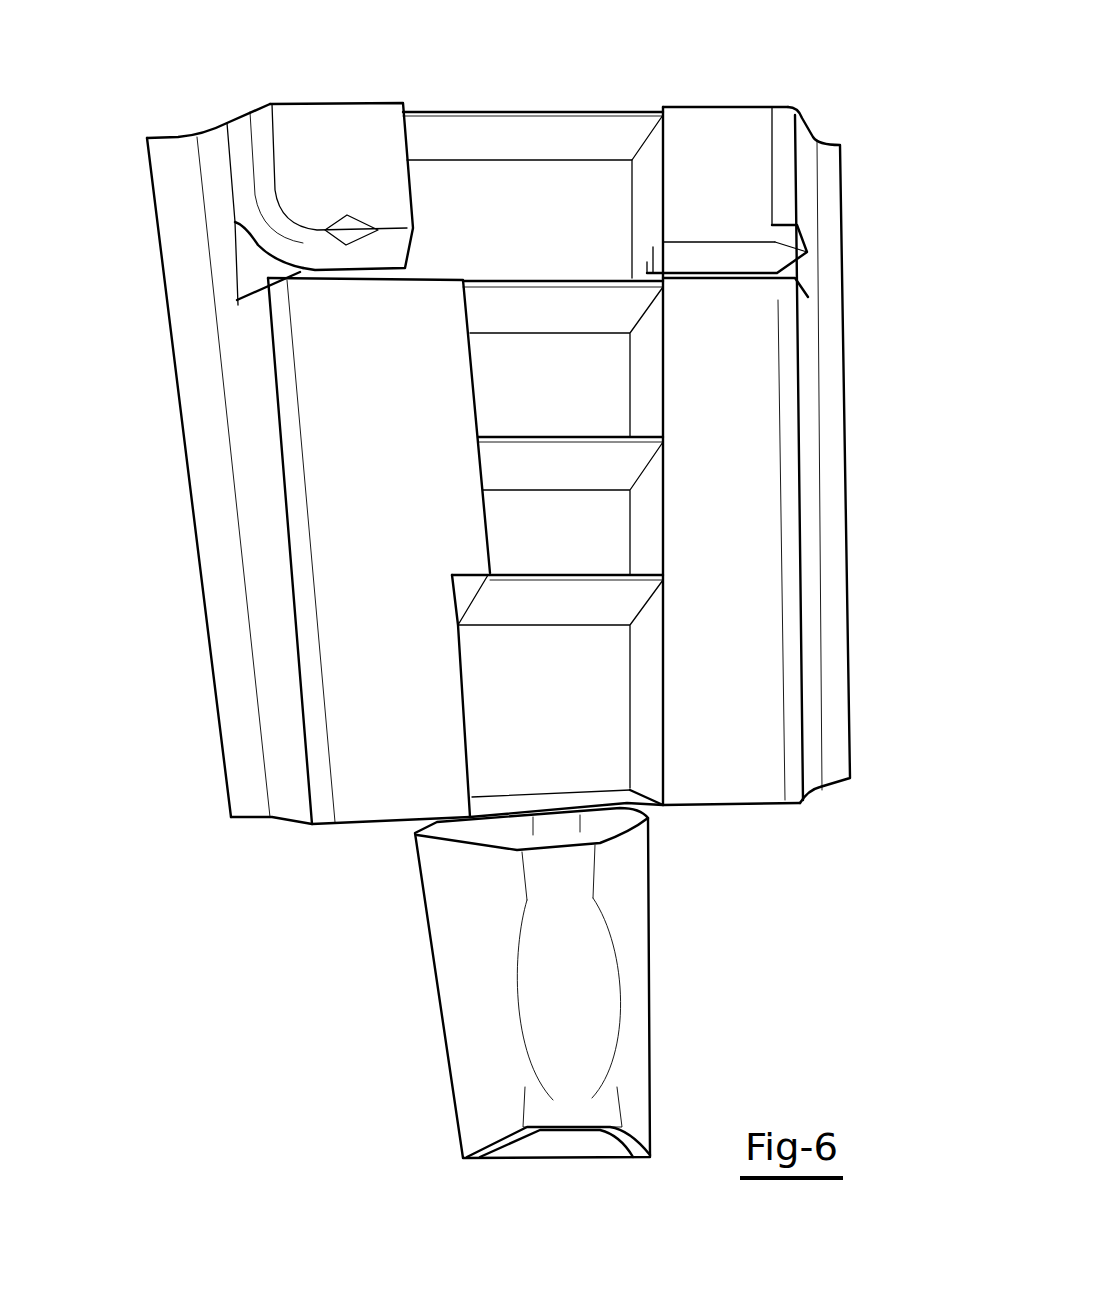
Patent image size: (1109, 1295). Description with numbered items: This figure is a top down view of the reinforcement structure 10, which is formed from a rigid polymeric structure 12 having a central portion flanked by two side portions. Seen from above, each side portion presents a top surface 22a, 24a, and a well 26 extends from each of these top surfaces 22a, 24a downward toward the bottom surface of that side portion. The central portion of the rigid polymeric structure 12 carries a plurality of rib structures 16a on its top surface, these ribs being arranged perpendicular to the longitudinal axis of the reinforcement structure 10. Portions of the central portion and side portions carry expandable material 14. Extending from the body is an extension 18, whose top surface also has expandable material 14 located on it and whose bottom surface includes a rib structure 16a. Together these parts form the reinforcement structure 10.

The reinforcement structure 10 is at (500, 582).
The rigid polymeric structure 12 is at (505, 200).
The expandable material 14 is at (388, 538).
The rib structures 16a is at (515, 428).
The extension 18 is at (483, 1050).
The top surface of side portion 22a is at (817, 525).
The top surface of side portion 24a is at (217, 503).
The wells 26 is at (240, 277).